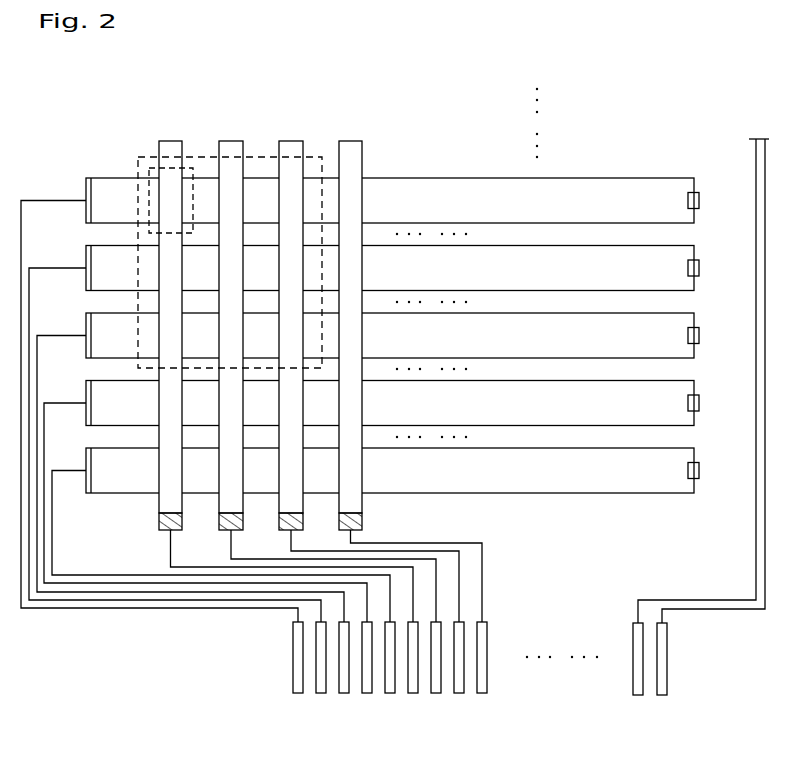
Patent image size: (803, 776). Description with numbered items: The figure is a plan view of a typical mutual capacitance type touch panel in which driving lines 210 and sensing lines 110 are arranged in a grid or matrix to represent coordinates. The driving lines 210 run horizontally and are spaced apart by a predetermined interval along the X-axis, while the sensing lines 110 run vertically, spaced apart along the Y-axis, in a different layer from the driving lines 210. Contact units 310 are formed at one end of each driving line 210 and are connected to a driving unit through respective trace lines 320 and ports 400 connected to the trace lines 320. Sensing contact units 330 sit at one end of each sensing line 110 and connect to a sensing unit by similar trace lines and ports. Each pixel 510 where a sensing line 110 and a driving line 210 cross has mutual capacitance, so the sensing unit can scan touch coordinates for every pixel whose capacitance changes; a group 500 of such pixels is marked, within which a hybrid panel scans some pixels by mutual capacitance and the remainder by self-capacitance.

The sensing lines 110 is at (166, 141).
The driving lines 210 is at (115, 178).
The contact units 310 is at (86, 187).
The trace lines 320 is at (42, 200).
The sensing contact units 330 is at (363, 522).
The ports 400 is at (391, 694).
The group 500 is at (257, 157).
The pixels 510 is at (193, 168).